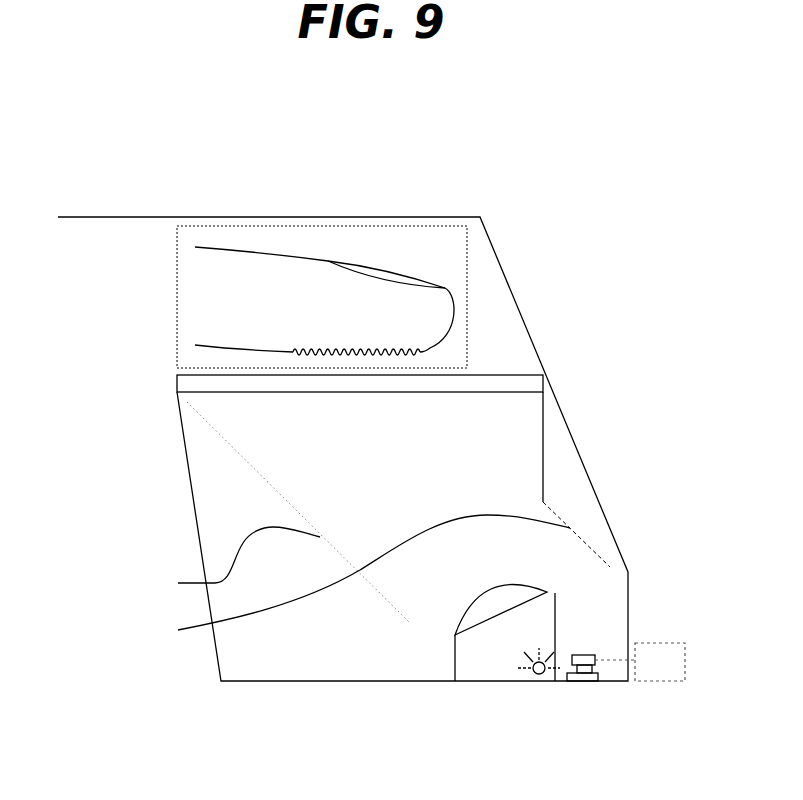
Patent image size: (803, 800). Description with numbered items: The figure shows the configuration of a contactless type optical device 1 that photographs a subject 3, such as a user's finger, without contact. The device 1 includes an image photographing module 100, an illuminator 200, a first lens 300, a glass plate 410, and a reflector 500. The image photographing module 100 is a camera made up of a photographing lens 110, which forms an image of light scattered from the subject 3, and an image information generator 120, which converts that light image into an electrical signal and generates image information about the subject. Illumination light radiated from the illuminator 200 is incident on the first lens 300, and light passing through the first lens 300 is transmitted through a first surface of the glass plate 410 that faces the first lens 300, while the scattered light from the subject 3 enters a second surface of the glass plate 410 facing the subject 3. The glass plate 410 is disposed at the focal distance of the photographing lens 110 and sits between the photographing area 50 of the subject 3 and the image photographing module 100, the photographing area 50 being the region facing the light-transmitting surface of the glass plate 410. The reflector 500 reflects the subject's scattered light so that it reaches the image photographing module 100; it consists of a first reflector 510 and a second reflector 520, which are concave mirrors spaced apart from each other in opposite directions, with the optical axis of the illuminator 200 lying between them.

The contactless type optical device 1 is at (332, 171).
The subject 3 is at (319, 258).
The photographing area 50 is at (177, 292).
The glass plate 410 is at (387, 393).
The reflector 500 is at (127, 565).
The first reflector 510 is at (226, 561).
The second reflector 520 is at (351, 578).
The first lens 300 is at (493, 597).
The illuminator 200 is at (533, 676).
The image photographing module 100 is at (582, 682).
The photographing lens 110 is at (588, 655).
The image information generator 120 is at (660, 683).